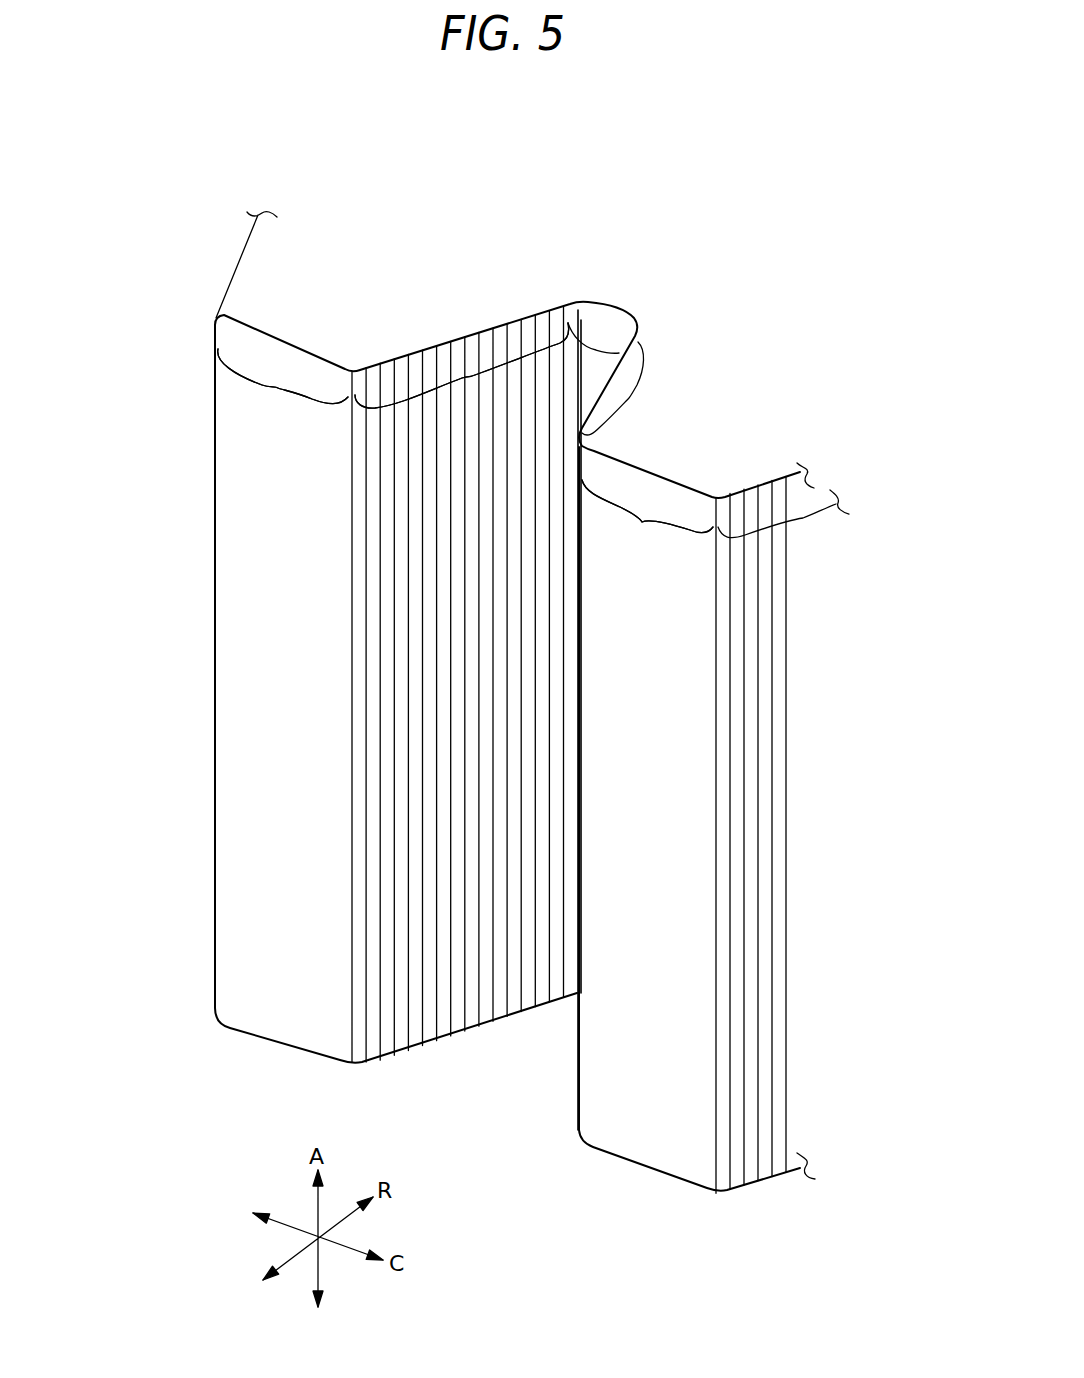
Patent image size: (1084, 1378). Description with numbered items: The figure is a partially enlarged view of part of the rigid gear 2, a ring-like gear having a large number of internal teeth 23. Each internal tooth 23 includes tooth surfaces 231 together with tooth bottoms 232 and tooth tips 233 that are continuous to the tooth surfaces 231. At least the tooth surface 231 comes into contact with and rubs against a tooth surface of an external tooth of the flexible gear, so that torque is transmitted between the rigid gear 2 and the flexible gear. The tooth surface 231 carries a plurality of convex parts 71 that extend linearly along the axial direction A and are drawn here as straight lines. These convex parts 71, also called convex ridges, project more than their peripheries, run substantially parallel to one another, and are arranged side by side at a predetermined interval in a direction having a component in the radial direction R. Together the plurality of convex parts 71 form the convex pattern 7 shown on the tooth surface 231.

The rigid gear 2 is at (692, 206).
The internal teeth 23 is at (302, 318).
The tooth surface 231 is at (471, 377).
The tooth bottom 232 is at (596, 350).
The tooth tip 233 is at (278, 388).
The convex part 71 is at (477, 1010).
The convex pattern 7 is at (751, 834).